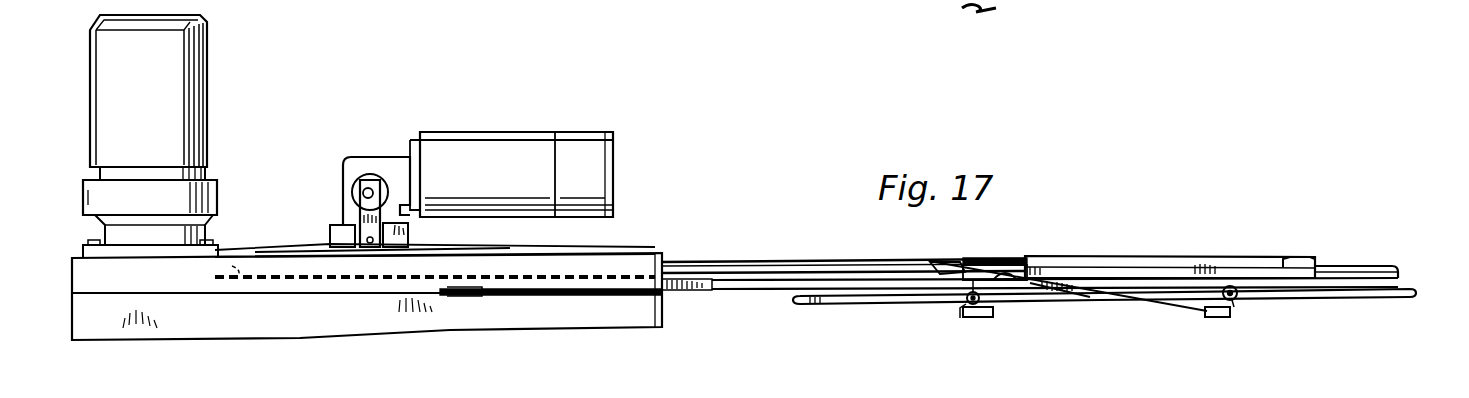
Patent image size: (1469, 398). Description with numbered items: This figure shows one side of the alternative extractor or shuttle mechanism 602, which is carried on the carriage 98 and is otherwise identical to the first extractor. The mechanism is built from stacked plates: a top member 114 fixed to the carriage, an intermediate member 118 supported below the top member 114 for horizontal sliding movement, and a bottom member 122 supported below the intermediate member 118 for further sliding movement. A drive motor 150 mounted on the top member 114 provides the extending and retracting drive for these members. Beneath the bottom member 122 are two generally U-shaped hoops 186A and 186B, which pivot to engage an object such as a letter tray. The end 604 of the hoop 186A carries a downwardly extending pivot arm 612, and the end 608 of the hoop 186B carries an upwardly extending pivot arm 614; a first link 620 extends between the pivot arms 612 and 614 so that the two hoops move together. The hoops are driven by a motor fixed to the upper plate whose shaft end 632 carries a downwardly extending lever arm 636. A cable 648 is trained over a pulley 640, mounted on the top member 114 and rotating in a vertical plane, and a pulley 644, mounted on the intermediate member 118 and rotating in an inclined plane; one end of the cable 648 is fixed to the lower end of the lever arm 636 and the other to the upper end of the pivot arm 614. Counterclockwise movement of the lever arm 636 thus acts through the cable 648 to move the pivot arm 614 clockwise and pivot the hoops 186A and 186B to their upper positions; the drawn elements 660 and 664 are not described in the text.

The carriage 98 is at (252, 344).
The drive motor 150 is at (168, 95).
The pulley 640 is at (226, 268).
The cable 648 is at (320, 246).
The lever arm 636 is at (356, 210).
The shaft end 632 is at (378, 176).
The shuttle mechanism 602 is at (689, 132).
The top member 114 is at (650, 253).
The intermediate member 118 is at (848, 270).
The pivot arm 614 is at (931, 262).
The pulley 644 is at (1013, 262).
The sleeve 664 is at (1157, 256).
The stop block 660 is at (1302, 257).
The bottom member 122 is at (1395, 266).
The hoop 186B is at (797, 305).
The hoop 186A is at (1411, 298).
The end of hoop 186B 608 is at (940, 306).
The first link 620 is at (1166, 303).
The pivot arm 612 is at (1238, 302).
The end of hoop 186A 604 is at (1260, 303).